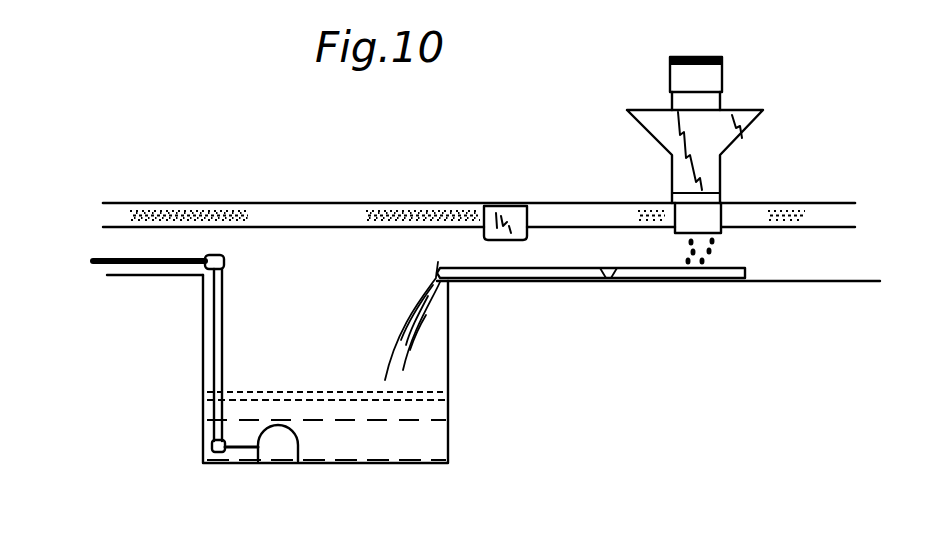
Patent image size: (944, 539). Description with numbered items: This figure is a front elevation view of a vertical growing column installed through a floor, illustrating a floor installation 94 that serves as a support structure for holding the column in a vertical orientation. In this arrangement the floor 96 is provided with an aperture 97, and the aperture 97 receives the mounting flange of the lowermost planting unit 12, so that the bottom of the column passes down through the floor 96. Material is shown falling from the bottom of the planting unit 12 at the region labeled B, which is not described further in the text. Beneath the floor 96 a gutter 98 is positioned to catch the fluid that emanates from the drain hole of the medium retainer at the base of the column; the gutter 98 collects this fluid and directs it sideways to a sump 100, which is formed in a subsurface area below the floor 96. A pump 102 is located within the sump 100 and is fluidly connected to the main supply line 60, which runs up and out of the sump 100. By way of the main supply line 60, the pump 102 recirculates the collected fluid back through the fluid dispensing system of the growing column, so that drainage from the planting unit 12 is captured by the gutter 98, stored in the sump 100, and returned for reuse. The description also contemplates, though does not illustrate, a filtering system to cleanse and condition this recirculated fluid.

The floor installation 94 is at (288, 202).
The floor 96 is at (402, 202).
The aperture 97 is at (518, 202).
The planting unit 12 is at (640, 134).
The buried outlet box B is at (724, 216).
The gutter 98 is at (602, 276).
The main supply line 60 is at (126, 258).
The sump 100 is at (400, 432).
The pump 102 is at (278, 448).